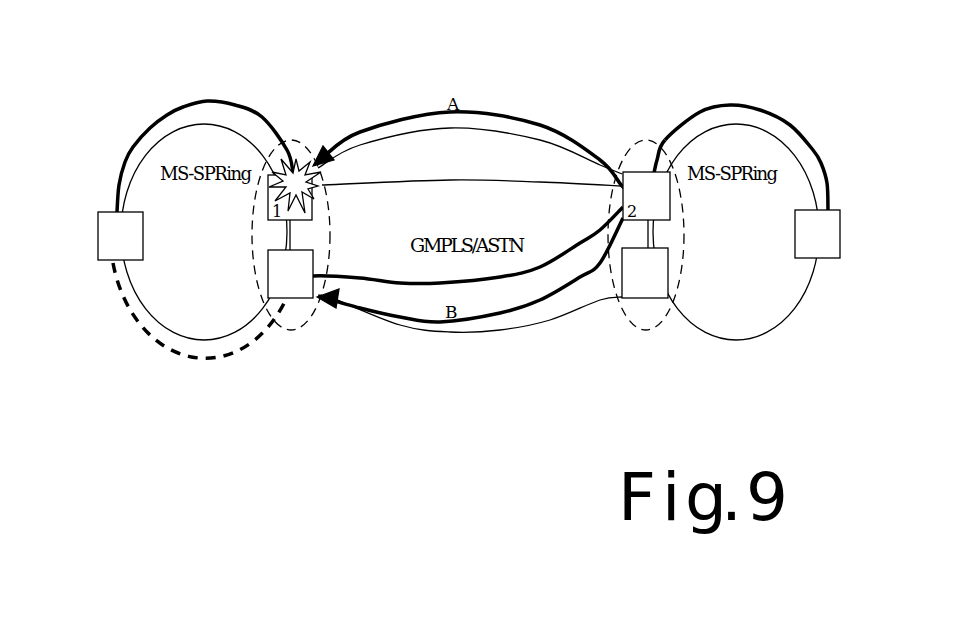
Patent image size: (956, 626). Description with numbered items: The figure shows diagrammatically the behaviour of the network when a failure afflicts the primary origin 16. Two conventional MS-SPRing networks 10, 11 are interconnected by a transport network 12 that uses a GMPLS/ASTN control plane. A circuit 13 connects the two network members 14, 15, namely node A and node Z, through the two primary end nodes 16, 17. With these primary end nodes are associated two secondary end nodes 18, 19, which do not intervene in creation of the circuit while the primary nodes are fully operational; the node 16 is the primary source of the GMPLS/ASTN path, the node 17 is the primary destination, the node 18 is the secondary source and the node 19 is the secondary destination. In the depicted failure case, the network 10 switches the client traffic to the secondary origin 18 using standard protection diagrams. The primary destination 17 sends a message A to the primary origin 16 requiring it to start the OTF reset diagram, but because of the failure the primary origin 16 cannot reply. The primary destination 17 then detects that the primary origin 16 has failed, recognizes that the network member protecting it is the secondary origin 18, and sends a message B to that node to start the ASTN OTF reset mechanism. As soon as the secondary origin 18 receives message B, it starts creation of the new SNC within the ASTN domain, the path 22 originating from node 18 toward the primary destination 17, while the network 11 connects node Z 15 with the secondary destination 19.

The conventional network 10 is at (207, 337).
The conventional network 11 is at (725, 332).
The transport network 12 is at (490, 330).
The circuit 13 is at (432, 180).
The network member 14 is at (107, 256).
The network member 15 is at (828, 252).
The primary end node 16 is at (301, 158).
The primary end node 17 is at (640, 178).
The secondary end node 18 is at (296, 297).
The secondary end node 19 is at (648, 292).
The restoration path from node 4 22 is at (387, 285).